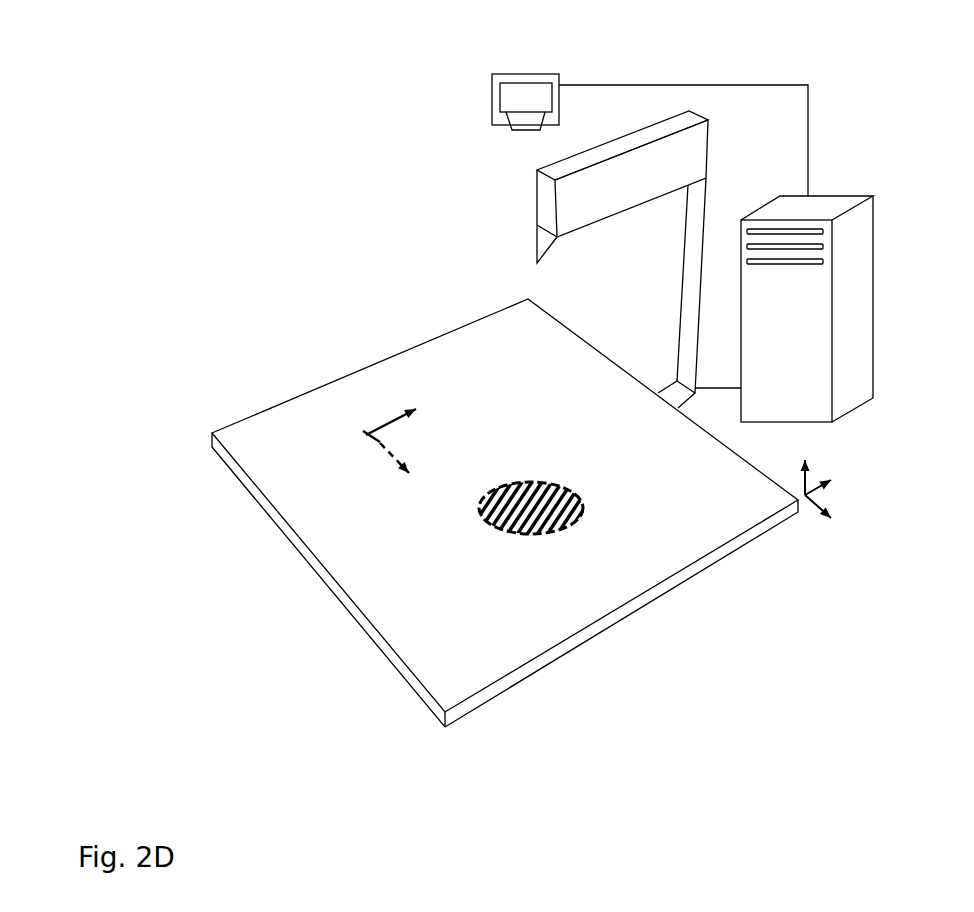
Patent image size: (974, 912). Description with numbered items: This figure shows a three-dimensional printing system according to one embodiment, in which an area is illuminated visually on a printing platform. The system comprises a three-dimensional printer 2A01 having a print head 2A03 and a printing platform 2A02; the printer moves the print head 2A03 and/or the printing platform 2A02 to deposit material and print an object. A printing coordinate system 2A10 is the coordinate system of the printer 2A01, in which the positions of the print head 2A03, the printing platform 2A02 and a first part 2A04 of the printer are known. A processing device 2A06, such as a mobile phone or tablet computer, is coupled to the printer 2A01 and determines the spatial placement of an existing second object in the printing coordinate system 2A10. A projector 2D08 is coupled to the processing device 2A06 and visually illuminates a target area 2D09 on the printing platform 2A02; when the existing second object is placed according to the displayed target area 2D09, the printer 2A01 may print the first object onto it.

The 3D printer 2A01 is at (362, 298).
The printing platform 2A02 is at (388, 612).
The print head 2A03 is at (532, 238).
The first part of the 3D printer 2A04 is at (360, 422).
The processing device 2A06 is at (888, 263).
The printing coordinate system 2A10 is at (861, 465).
The projector 2D08 is at (550, 63).
The target area 2D09 is at (580, 525).